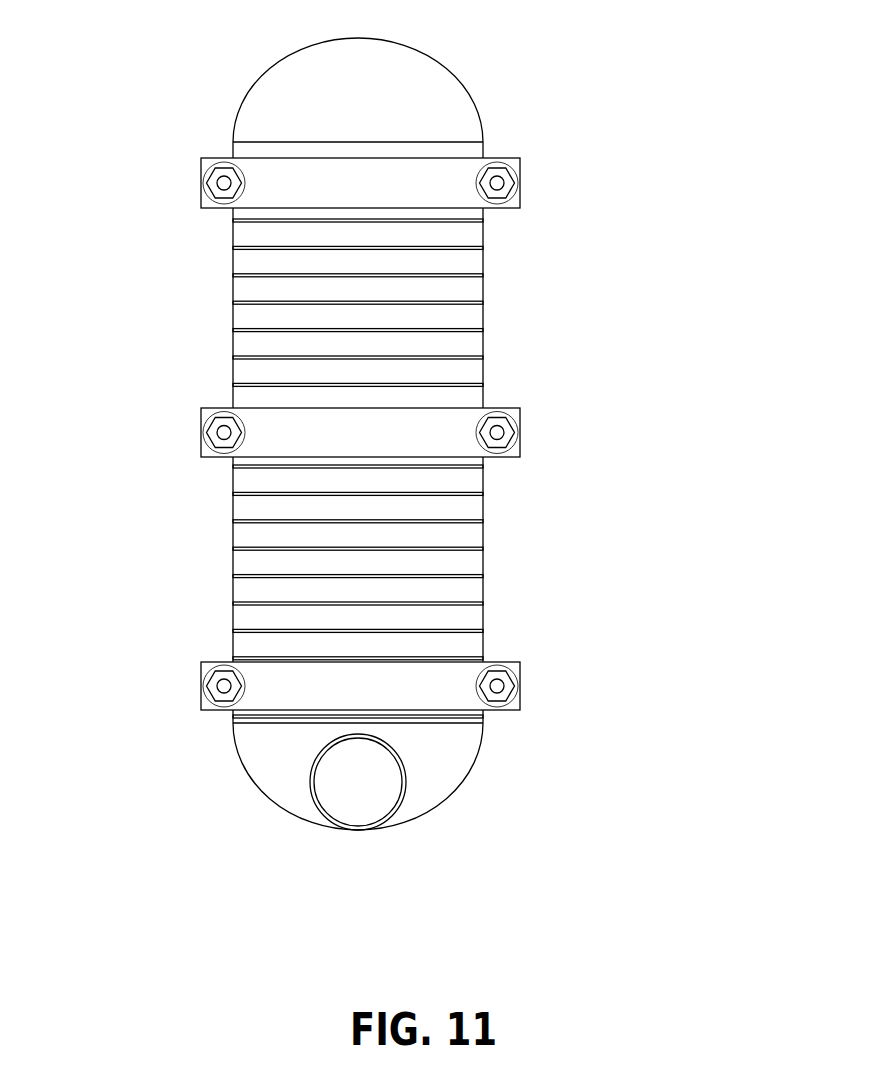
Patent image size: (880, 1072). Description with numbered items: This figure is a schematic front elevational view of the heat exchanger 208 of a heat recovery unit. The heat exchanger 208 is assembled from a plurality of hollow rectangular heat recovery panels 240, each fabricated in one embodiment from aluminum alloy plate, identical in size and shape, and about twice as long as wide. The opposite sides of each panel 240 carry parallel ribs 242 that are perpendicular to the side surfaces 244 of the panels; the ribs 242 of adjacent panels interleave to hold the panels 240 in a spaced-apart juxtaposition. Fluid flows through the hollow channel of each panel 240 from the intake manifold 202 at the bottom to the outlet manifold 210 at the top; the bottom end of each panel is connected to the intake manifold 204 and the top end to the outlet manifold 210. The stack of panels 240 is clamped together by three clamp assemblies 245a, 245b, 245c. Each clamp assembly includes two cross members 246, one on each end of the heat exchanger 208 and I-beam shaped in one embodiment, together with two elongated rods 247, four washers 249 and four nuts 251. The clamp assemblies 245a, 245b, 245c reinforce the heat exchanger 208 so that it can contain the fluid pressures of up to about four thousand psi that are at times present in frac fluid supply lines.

The intake manifold 202 is at (395, 815).
The intake manifold 204 is at (462, 763).
The heat exchanger 208 is at (609, 97).
The outlet manifold 210 is at (420, 75).
The heat recovery panel 240 is at (492, 327).
The ribs 242 is at (483, 522).
The side surfaces 244 is at (483, 617).
The clamp assembly 245a is at (199, 210).
The clamp assembly 245b is at (199, 460).
The clamp assembly 245c is at (199, 713).
The cross member 246 is at (513, 203).
The elongated rod 247 is at (497, 432).
The washer 249 is at (515, 422).
The nut 251 is at (505, 440).